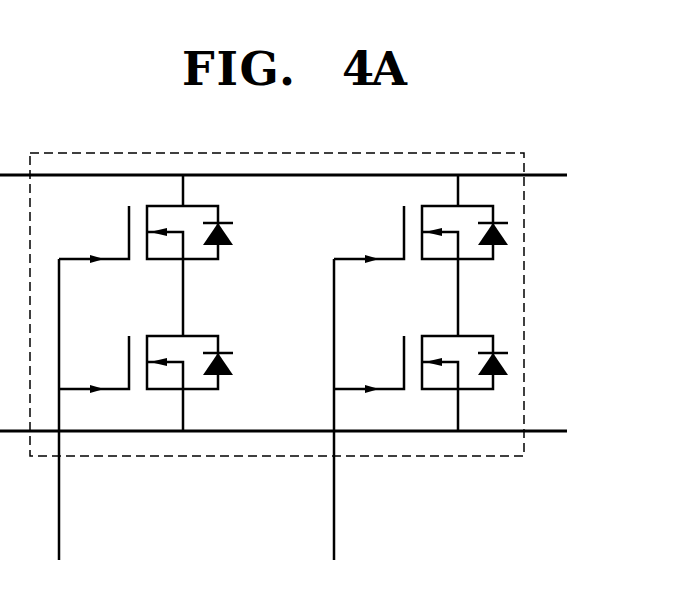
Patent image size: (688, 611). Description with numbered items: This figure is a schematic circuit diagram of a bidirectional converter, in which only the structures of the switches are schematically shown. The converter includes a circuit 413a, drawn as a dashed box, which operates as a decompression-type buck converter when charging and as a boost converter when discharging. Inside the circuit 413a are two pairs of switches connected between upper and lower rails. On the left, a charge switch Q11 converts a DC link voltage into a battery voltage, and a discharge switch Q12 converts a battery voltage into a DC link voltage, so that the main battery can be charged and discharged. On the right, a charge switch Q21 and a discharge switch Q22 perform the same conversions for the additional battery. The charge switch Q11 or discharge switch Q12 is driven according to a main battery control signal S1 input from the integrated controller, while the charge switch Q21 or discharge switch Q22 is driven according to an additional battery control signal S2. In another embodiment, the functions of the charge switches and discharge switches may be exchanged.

The circuit 413a is at (377, 153).
The charge switch Q11 is at (146, 255).
The discharge switch Q12 is at (146, 367).
The charge switch Q21 is at (421, 255).
The discharge switch Q22 is at (421, 367).
The main battery control signal S1 is at (72, 500).
The additional battery control signal S2 is at (348, 502).